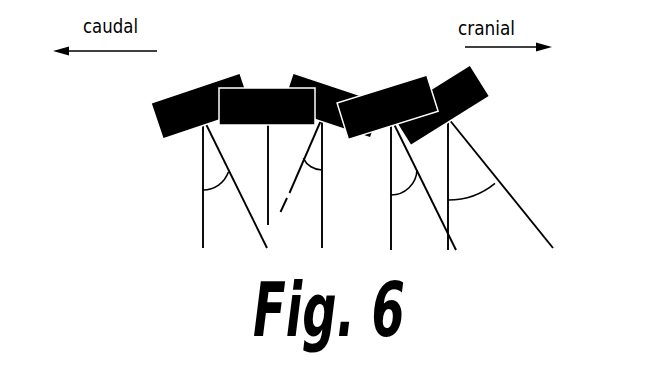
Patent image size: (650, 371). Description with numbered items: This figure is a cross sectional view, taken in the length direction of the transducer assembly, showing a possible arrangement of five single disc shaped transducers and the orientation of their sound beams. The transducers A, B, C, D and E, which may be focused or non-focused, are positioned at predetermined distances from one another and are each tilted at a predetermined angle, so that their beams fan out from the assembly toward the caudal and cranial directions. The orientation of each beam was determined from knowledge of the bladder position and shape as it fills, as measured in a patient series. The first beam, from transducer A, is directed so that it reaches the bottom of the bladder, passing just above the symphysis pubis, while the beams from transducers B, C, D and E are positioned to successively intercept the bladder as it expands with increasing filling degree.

The transducer A is at (332, 152).
The transducer B is at (267, 141).
The transducer C is at (209, 152).
The transducer D is at (396, 153).
The transducer E is at (472, 153).